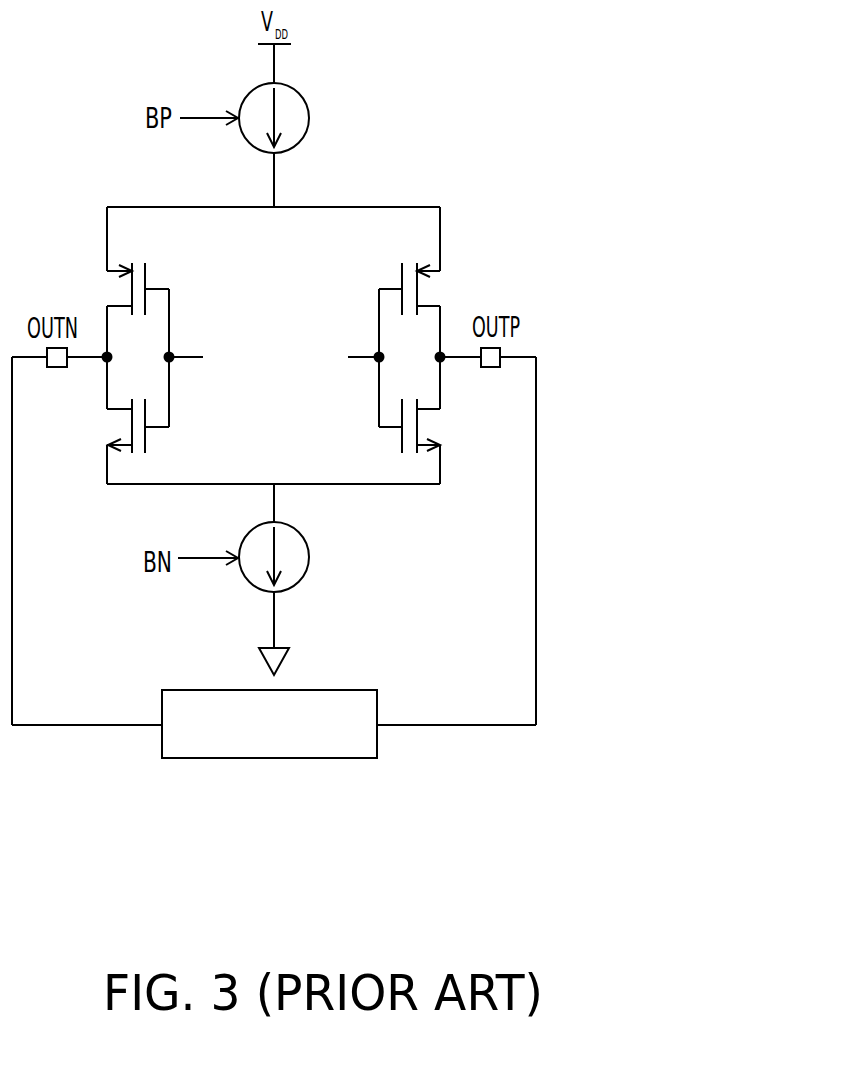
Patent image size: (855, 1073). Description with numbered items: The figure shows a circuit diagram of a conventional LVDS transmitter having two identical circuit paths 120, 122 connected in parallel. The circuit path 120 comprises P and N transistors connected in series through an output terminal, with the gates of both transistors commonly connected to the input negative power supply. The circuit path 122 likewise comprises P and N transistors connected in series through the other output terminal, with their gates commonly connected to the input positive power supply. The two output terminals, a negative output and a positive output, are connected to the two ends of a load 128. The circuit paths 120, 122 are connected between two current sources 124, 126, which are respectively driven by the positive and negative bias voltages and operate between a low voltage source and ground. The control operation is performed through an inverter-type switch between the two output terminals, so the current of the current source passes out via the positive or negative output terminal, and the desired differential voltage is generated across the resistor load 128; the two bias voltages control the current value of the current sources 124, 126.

The circuit path 120 is at (456, 321).
The circuit path 122 is at (187, 330).
The current source 124 is at (309, 118).
The current source 126 is at (309, 558).
The load 128 is at (377, 705).